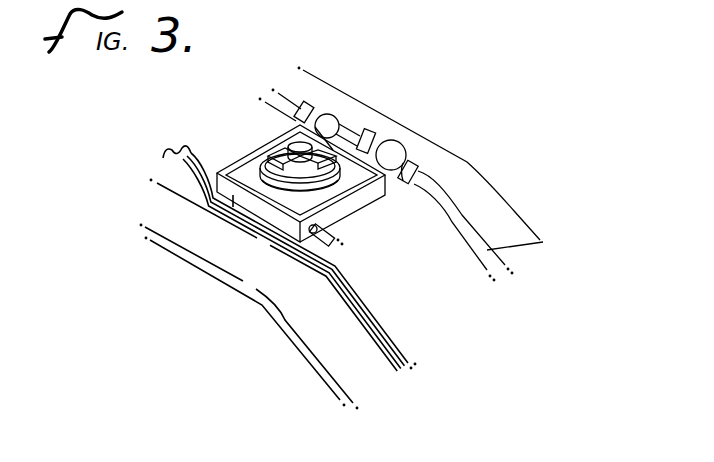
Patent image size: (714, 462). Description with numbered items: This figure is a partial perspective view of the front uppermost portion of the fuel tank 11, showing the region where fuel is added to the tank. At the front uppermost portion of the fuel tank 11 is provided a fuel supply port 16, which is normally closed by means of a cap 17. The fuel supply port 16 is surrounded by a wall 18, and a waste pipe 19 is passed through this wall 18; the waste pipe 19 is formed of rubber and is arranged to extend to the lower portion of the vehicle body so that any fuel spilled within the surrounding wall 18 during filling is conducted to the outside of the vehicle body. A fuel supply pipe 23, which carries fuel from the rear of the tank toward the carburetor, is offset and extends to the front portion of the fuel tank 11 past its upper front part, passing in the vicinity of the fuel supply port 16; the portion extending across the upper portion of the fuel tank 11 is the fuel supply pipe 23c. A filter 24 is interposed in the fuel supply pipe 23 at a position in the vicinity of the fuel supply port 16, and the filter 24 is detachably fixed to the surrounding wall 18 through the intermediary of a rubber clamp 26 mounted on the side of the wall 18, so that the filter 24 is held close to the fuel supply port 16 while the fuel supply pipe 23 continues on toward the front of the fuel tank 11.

The fuel tank 11 is at (465, 160).
The fuel supply port 16 is at (350, 120).
The cap 17 is at (263, 146).
The wall 18 is at (352, 207).
The waste pipe 19 is at (343, 243).
The fuel supply pipe 23 is at (466, 215).
The fuel supply pipe 23c is at (543, 242).
The filter 24 is at (403, 150).
The rubber clamp 26 is at (333, 114).